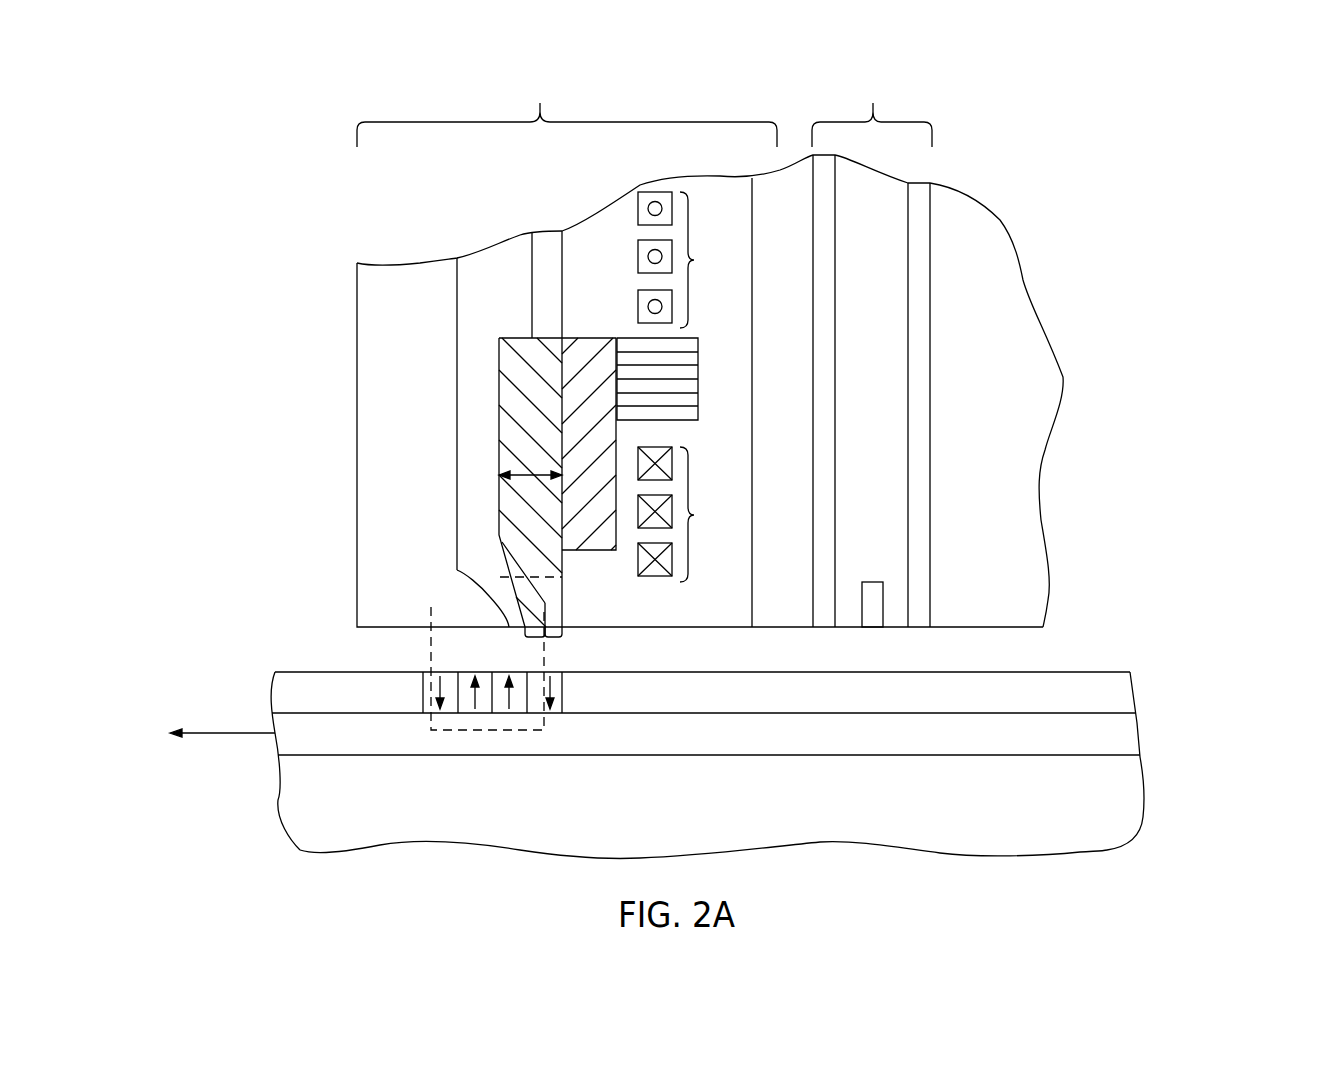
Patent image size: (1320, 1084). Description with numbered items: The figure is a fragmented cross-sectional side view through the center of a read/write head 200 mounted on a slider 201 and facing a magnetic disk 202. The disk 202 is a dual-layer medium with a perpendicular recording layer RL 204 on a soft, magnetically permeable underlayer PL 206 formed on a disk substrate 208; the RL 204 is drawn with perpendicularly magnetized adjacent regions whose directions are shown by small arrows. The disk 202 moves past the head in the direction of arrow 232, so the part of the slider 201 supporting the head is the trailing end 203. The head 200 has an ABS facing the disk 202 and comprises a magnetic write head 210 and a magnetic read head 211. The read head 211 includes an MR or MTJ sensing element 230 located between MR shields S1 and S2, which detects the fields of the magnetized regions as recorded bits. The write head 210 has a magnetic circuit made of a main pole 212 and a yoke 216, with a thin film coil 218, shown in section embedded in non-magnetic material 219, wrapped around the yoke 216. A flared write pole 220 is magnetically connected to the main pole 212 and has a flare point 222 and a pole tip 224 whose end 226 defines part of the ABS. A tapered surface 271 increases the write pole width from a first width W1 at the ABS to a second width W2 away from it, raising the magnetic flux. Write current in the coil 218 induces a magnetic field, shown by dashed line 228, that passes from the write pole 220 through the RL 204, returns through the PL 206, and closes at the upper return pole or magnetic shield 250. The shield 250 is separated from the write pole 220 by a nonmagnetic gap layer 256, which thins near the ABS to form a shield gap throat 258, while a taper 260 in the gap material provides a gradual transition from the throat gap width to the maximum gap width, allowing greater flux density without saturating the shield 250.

The read/write head 200 is at (300, 212).
The slider 201 is at (1033, 342).
The magnetic disk 202 is at (1160, 780).
The trailing end 203 is at (300, 418).
The recording layer 204 is at (1122, 690).
The permeable underlayer 206 is at (1128, 742).
The disk substrate 208 is at (1122, 832).
The magnetic write head 210 is at (567, 109).
The magnetic read head 211 is at (842, 349).
The main pole 212 is at (593, 370).
The yoke 216 is at (680, 329).
The thin film coil 218 is at (688, 387).
The non-magnetic material 219 is at (613, 267).
The write pole 220 is at (513, 350).
The flare point 222 is at (500, 548).
The pole tip 224 is at (542, 603).
The end of write pole 226 is at (560, 637).
The magnetic field 228 is at (430, 643).
The MR sensing element 230 is at (875, 593).
The arrow 232 is at (223, 732).
The upper return pole 250 is at (400, 280).
The nonmagnetic gap layer 256 is at (465, 392).
The shield gap throat 258 is at (493, 583).
The taper 260 is at (457, 572).
The tapered surface 271 is at (500, 578).
The first width W1 is at (540, 640).
The second width W2 is at (530, 475).
The MR shield S1 is at (920, 423).
The MR shield S2 is at (823, 373).
The air bearing surface ABS is at (622, 627).